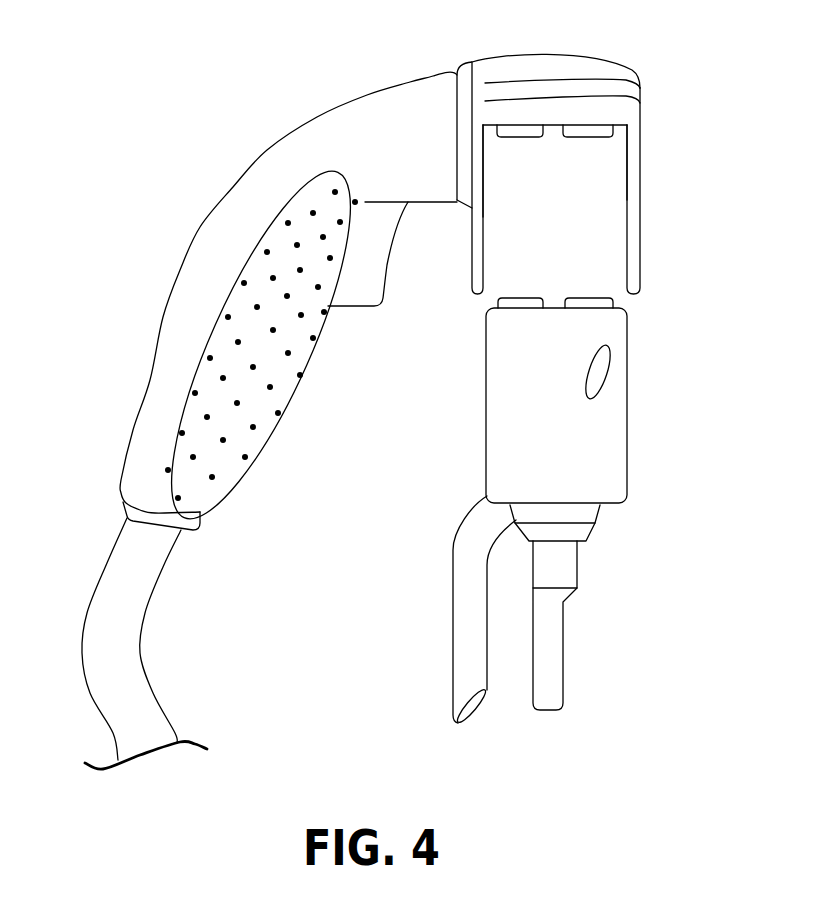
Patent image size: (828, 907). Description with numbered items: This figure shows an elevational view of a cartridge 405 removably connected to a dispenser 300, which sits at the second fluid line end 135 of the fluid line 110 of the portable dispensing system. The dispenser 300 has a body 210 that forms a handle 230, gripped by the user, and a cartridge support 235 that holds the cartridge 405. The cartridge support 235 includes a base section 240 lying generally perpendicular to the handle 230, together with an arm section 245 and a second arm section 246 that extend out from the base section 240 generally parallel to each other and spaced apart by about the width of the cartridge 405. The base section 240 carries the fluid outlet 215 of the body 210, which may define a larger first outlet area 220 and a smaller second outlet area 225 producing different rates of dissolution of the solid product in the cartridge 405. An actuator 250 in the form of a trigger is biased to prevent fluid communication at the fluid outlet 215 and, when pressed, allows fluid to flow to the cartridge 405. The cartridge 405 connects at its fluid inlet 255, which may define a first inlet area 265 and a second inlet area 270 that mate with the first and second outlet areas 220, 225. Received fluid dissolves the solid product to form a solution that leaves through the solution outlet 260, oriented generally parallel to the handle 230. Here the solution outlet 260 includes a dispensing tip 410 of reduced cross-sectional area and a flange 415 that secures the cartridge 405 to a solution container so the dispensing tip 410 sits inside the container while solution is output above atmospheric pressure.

The fluid line 110 is at (102, 640).
The second fluid line end 135 is at (167, 560).
The body 210 is at (408, 107).
The fluid outlet 215 is at (548, 146).
The first outlet area 220 is at (570, 137).
The second outlet area 225 is at (540, 137).
The handle 230 is at (252, 408).
The cartridge support 235 is at (641, 105).
The base section 240 is at (537, 87).
The arm section 245 is at (640, 200).
The second arm section 246 is at (473, 217).
The actuator 250 is at (343, 297).
The fluid inlet 255 is at (557, 290).
The solution outlet 260 is at (611, 512).
The first inlet area 265 is at (600, 297).
The second inlet area 270 is at (520, 297).
The dispenser 300 is at (316, 101).
The cartridge 405 is at (641, 415).
The dispensing tip 410 is at (586, 592).
The flange 415 is at (438, 618).